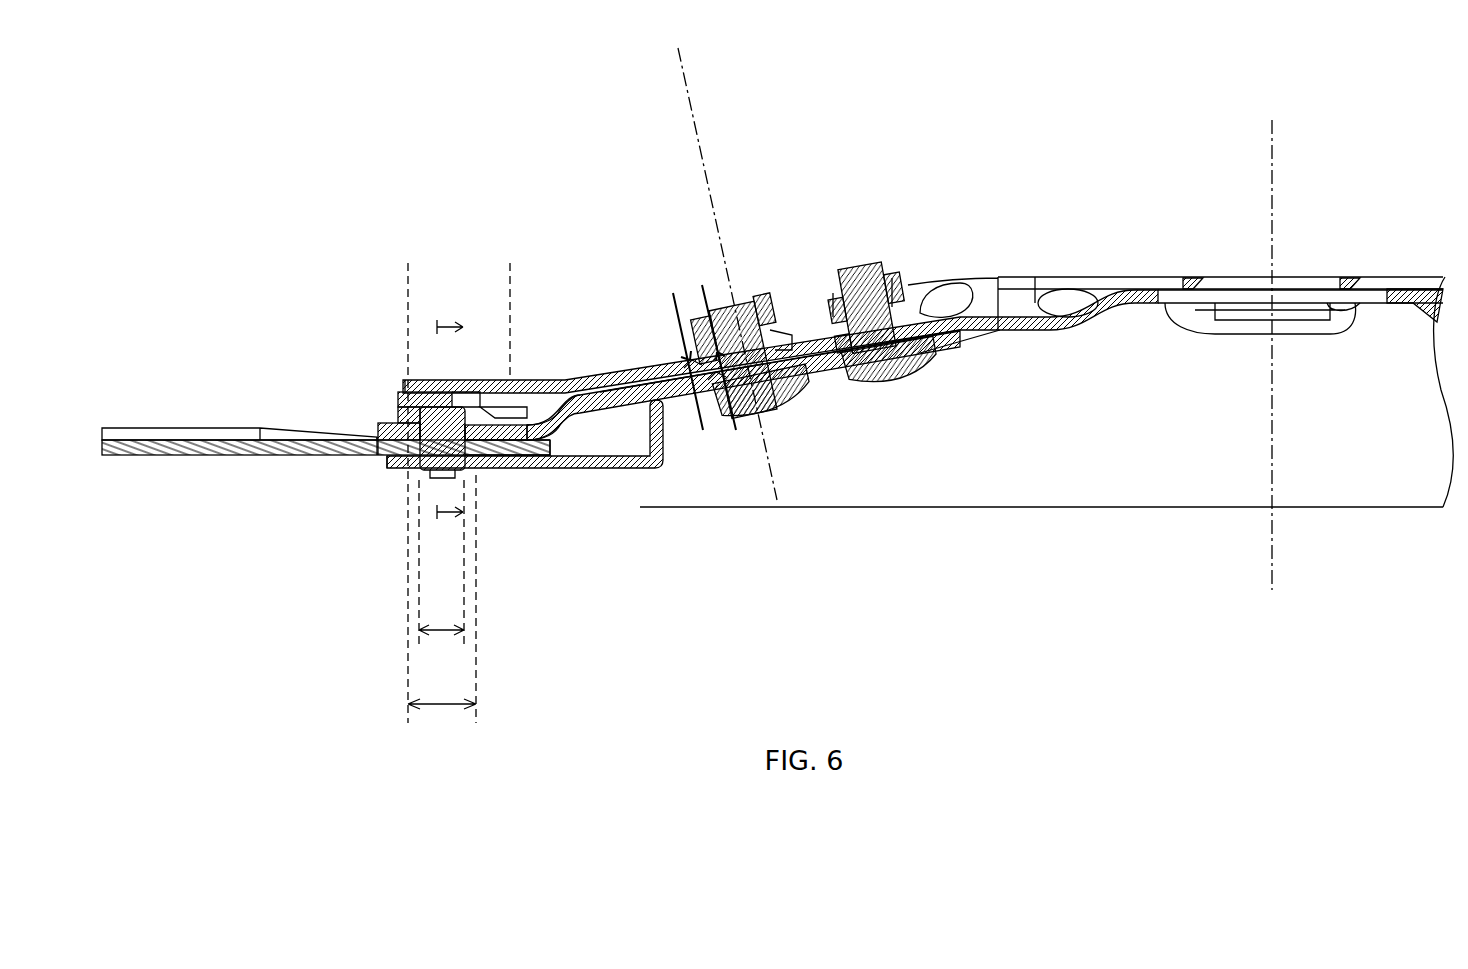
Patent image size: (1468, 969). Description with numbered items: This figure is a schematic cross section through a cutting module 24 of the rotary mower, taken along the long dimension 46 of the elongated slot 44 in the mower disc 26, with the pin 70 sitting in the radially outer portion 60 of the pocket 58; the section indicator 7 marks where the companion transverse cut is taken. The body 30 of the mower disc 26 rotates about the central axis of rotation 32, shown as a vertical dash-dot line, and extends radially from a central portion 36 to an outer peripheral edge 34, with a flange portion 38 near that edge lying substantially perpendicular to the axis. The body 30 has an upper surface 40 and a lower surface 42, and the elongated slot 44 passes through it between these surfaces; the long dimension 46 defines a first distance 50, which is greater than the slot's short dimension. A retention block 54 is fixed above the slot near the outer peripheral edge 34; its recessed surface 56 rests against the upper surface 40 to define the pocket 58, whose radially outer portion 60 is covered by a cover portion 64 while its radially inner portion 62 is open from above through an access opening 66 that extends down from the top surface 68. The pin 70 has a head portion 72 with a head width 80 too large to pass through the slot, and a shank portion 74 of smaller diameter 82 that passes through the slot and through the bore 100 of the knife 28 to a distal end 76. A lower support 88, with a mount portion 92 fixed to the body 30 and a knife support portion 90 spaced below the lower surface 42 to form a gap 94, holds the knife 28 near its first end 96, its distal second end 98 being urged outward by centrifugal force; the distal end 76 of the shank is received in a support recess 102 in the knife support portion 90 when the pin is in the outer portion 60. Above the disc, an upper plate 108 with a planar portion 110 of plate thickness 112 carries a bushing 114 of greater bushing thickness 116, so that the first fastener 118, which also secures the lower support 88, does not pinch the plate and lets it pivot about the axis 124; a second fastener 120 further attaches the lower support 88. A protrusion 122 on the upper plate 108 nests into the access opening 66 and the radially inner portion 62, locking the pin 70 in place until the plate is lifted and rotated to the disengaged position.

The cutting module 24 is at (321, 76).
The mower disc 26 is at (1018, 264).
The knife 28 is at (190, 428).
The body 30 is at (945, 293).
The central axis of rotation 32 is at (1268, 133).
The outer peripheral edge 34 is at (390, 426).
The central portion 36 is at (820, 293).
The flange portion 38 is at (397, 414).
The upper surface 40 is at (915, 293).
The lower surface 42 is at (935, 510).
The elongated slot 44 is at (548, 382).
The long dimension 46 is at (470, 262).
The first distance 50 is at (498, 268).
The retention block 54 is at (403, 415).
The recessed surface 56 is at (452, 380).
The pocket 58 is at (493, 380).
The radially outer portion 60 is at (403, 403).
The radially inner portion 62 is at (582, 386).
The cover portion 64 is at (423, 378).
The access opening 66 is at (470, 380).
The top surface 68 is at (413, 378).
The pin 70 is at (425, 470).
The head portion 72 is at (492, 460).
The shank portion 74 is at (475, 470).
The distal end 76 is at (442, 478).
The section line 7 is at (459, 493).
The head width 80 is at (446, 706).
The diameter 82 is at (441, 632).
The lower support 88 is at (625, 468).
The knife support portion 90 is at (545, 458).
The mount portion 92 is at (830, 385).
The gap 94 is at (578, 472).
The first end 96 is at (522, 470).
The distal second end 98 is at (104, 440).
The bore 100 is at (400, 455).
The support recess 102 is at (458, 478).
The upper plate 108 is at (672, 330).
The planar portion 110 is at (692, 340).
The plate thickness 112 is at (702, 440).
The bushing 114 is at (787, 297).
The bushing thickness 116 is at (728, 440).
The first fastener 118 is at (735, 298).
The second fastener 120 is at (873, 267).
The protrusion 122 is at (520, 380).
The axis 124 is at (790, 478).